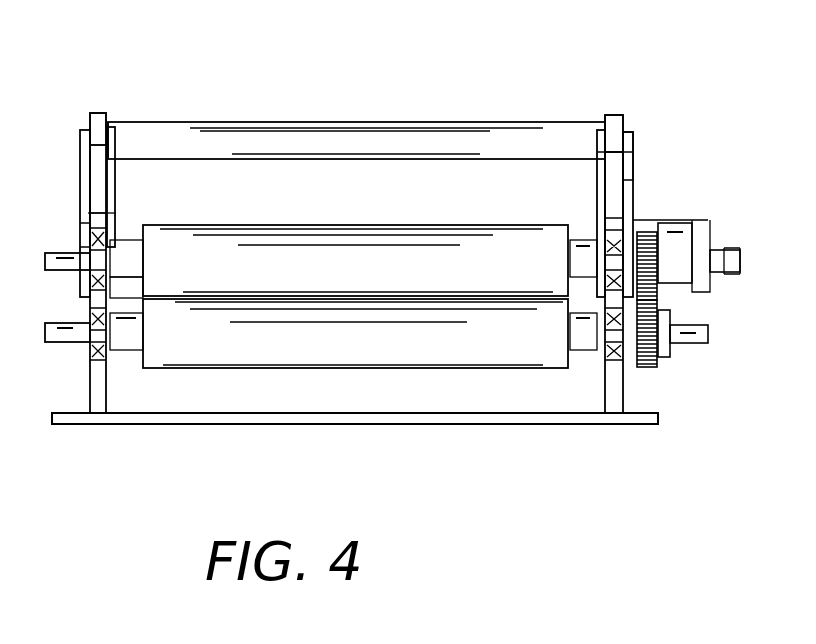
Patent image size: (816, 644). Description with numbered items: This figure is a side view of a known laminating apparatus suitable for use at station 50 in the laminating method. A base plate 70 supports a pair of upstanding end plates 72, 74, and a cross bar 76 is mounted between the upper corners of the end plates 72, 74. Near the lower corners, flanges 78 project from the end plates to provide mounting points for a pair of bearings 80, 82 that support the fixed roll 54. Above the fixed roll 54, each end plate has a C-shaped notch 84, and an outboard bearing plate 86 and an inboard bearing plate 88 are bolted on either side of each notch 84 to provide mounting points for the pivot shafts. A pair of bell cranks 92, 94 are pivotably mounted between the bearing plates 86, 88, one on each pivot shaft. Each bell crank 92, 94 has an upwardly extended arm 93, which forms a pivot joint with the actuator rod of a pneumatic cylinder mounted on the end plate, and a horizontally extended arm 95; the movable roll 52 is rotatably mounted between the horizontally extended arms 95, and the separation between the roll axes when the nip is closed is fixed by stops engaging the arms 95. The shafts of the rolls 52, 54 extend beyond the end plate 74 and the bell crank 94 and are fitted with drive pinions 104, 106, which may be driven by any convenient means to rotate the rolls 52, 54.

The station 50 is at (130, 96).
The movable roll 52 is at (478, 243).
The fixed roll 54 is at (466, 348).
The base plate 70 is at (468, 424).
The end plate 72 is at (92, 378).
The end plate 74 is at (624, 398).
The cross bar 76 is at (389, 137).
The flanges 78 is at (92, 350).
The bearing 80 is at (92, 318).
The bearing 82 is at (599, 363).
The C-shaped notch 84 is at (102, 114).
The outboard bearing plate 86 is at (84, 142).
The inboard bearing plate 88 is at (118, 140).
The bell crank 92 is at (104, 222).
The upwardly extended arm 93 is at (102, 180).
The bell crank 94 is at (616, 218).
The horizontally extended arms 95 is at (98, 240).
The drive pinion 104 is at (676, 290).
The drive pinion 106 is at (674, 320).